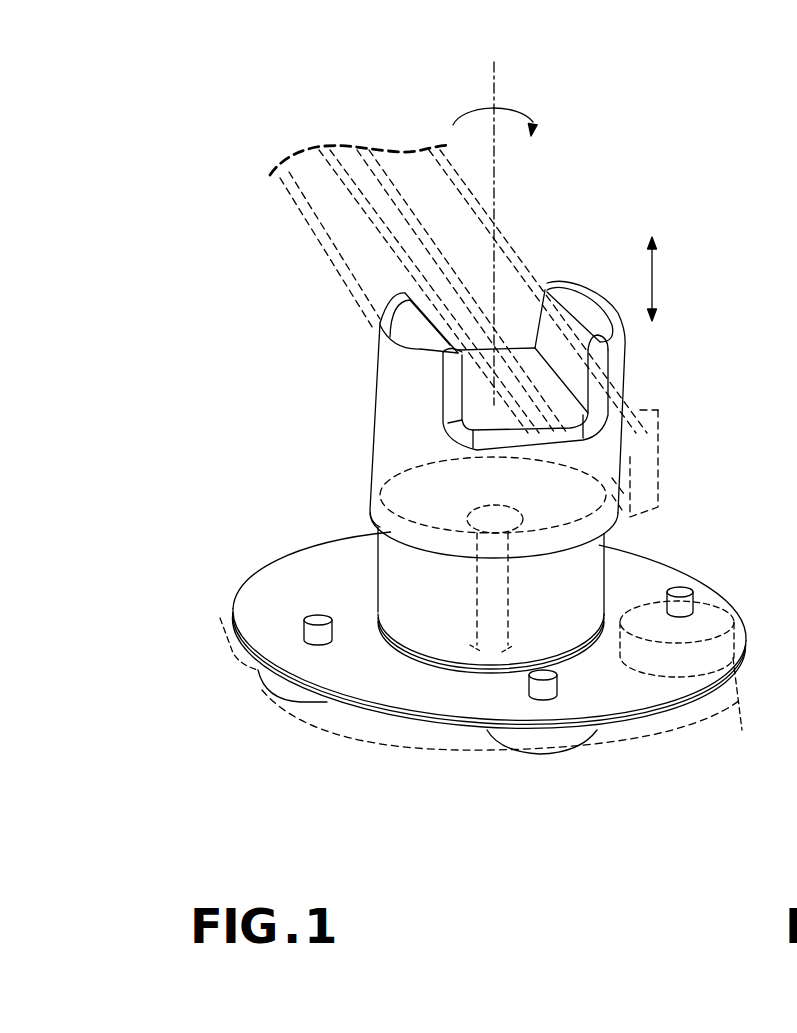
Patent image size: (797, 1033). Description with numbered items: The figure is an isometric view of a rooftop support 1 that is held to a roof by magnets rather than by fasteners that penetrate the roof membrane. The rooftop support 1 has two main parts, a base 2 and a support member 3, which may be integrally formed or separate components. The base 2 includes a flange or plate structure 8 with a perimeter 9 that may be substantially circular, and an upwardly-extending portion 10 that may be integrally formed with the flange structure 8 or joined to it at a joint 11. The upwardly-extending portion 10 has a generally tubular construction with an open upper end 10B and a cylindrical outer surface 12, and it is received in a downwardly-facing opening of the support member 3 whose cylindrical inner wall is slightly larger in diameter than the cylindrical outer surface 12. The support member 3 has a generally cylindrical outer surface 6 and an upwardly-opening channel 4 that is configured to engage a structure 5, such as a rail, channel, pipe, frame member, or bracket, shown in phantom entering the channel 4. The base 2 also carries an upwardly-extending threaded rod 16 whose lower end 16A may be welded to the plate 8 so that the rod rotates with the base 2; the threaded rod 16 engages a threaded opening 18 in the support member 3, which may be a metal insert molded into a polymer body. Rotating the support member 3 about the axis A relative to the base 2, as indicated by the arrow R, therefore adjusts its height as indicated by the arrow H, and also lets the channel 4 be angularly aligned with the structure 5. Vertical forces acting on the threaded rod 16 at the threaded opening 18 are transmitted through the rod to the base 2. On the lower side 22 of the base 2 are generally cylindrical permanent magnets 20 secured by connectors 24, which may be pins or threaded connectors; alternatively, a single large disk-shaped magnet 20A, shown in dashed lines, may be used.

The rooftop support 1 is at (667, 360).
The base 2 is at (707, 575).
The support member 3 is at (629, 456).
The upwardly-opening channel 4 is at (457, 303).
The structure 5 is at (507, 263).
The cylindrical outer surface 6 is at (403, 407).
The flange structure 8 is at (313, 580).
The perimeter 9 is at (230, 613).
The upwardly-extending portion 10 is at (397, 558).
The open upper end 10B is at (634, 470).
The joint 11 is at (405, 645).
The cylindrical outer surface 12 is at (397, 588).
The threaded rod 16 is at (448, 640).
The lower end 16A is at (425, 700).
The threaded opening 18 is at (405, 450).
The magnets 20 is at (277, 690).
The single large magnet 20A is at (738, 712).
The lower side 22 is at (460, 747).
The connectors 24 is at (304, 628).
The axis A is at (493, 73).
The arrow R is at (531, 114).
The arrow H is at (653, 280).